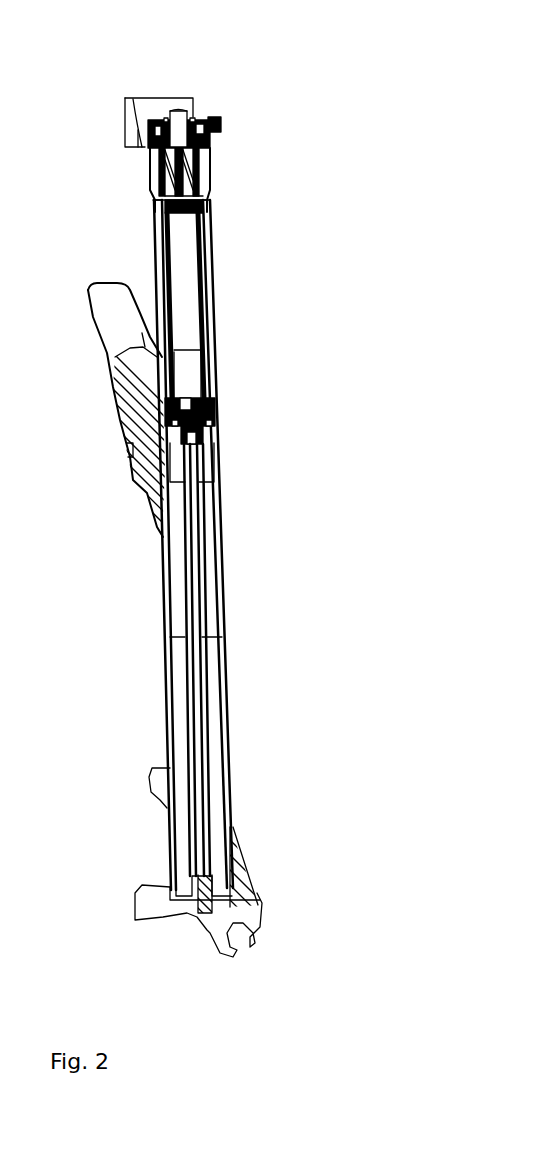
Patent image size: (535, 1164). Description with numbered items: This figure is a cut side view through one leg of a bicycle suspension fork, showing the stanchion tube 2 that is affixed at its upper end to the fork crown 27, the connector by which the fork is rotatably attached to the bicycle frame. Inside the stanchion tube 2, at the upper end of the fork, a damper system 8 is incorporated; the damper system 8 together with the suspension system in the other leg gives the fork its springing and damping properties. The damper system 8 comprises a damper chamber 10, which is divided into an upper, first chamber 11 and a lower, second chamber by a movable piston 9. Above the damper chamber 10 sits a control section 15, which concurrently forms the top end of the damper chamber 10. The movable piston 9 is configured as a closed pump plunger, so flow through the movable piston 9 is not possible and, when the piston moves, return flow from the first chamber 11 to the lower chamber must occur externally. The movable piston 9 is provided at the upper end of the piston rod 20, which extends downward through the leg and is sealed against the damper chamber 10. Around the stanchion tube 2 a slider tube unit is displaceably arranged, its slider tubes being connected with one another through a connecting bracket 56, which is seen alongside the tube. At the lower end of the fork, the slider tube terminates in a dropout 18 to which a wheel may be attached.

The stanchion tube 2 is at (240, 297).
The damper system 8 is at (232, 137).
The movable piston 9 is at (205, 428).
The damper chamber 10 is at (185, 333).
The first chamber 11 is at (183, 255).
The control section 15 is at (232, 198).
The dropout 18 is at (277, 930).
The piston rod 20 is at (198, 715).
The fork crown 27 is at (138, 73).
The connecting bracket 56 is at (92, 340).